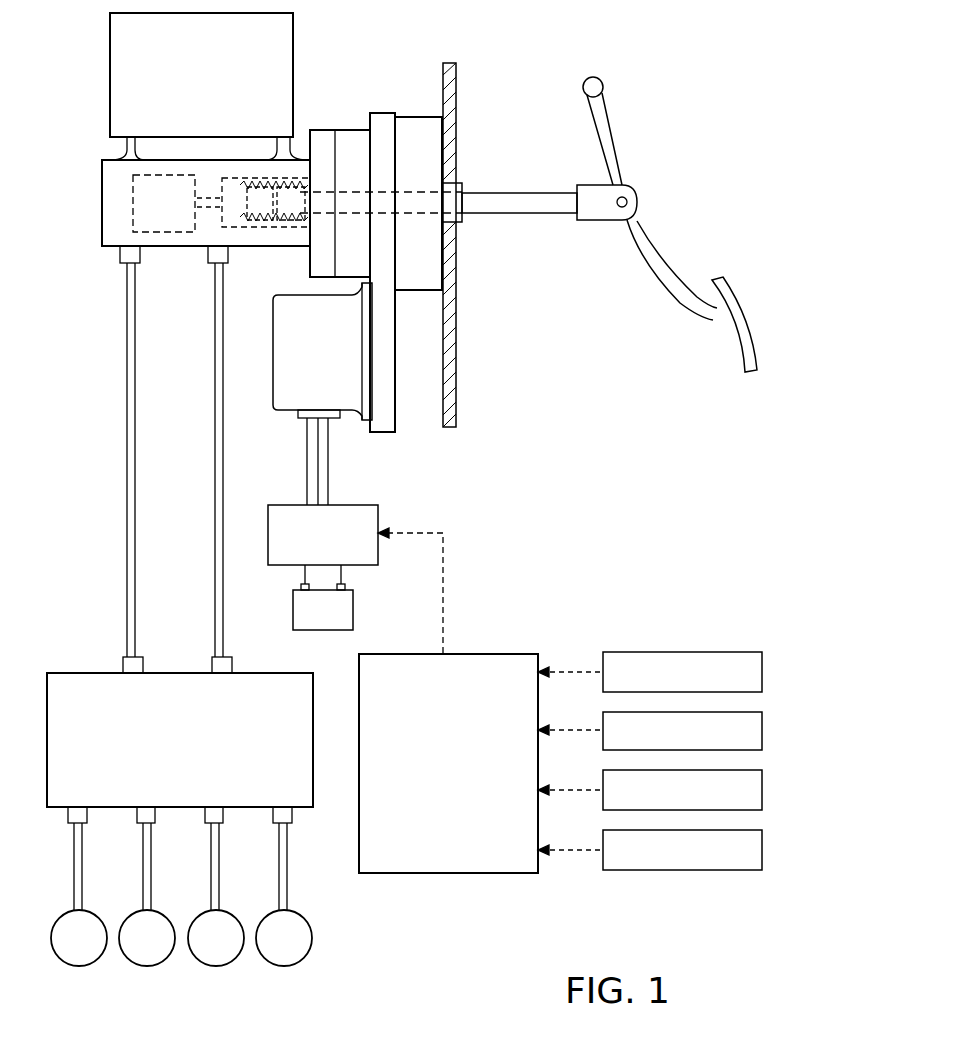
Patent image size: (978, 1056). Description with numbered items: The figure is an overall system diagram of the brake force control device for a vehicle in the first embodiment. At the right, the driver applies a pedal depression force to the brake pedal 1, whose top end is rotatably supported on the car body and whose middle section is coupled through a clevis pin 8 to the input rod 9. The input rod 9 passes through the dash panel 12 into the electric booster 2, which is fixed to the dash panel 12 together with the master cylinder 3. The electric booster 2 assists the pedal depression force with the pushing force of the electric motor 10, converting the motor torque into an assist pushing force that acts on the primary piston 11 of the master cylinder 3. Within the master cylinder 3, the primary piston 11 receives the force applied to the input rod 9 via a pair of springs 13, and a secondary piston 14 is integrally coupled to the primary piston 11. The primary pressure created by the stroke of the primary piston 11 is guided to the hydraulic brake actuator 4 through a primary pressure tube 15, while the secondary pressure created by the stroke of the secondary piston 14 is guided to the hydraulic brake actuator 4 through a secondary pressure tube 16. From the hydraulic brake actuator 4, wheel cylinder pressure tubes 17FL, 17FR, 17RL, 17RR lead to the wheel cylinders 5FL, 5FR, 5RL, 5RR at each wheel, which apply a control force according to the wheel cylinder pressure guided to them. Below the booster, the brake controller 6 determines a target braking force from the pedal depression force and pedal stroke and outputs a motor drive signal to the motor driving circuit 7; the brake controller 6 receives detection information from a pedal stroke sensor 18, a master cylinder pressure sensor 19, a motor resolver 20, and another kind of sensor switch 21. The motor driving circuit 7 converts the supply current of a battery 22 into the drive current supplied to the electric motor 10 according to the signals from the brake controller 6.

The brake pedal 1 is at (728, 268).
The electric booster 2 is at (388, 105).
The master cylinder 3 is at (174, 252).
The hydraulic brake actuator 4 is at (176, 668).
The wheel cylinder 5FL is at (80, 966).
The wheel cylinder 5FR is at (148, 966).
The wheel cylinder 5RL is at (217, 966).
The wheel cylinder 5RR is at (285, 966).
The brake controller 6 is at (490, 653).
The motor driving circuit 7 is at (360, 503).
The clevis pin 8 is at (630, 202).
The input rod 9 is at (495, 192).
The electric motor 10 is at (273, 345).
The primary piston 11 is at (240, 230).
The dash panel 12 is at (458, 80).
The springs 13 is at (298, 226).
The secondary piston 14 is at (130, 211).
The primary pressure tube 15 is at (215, 446).
The secondary pressure tube 16 is at (127, 446).
The wheel cylinder pressure tube 17FL is at (74, 872).
The wheel cylinder pressure tube 17FR is at (143, 872).
The wheel cylinder pressure tube 17RL is at (211, 872).
The wheel cylinder pressure tube 17RR is at (279, 872).
The pedal stroke sensor 18 is at (762, 672).
The master cylinder pressure sensor 19 is at (762, 730).
The motor resolver 20 is at (762, 790).
The another kind of sensor switch 21 is at (762, 850).
The battery 22 is at (353, 608).